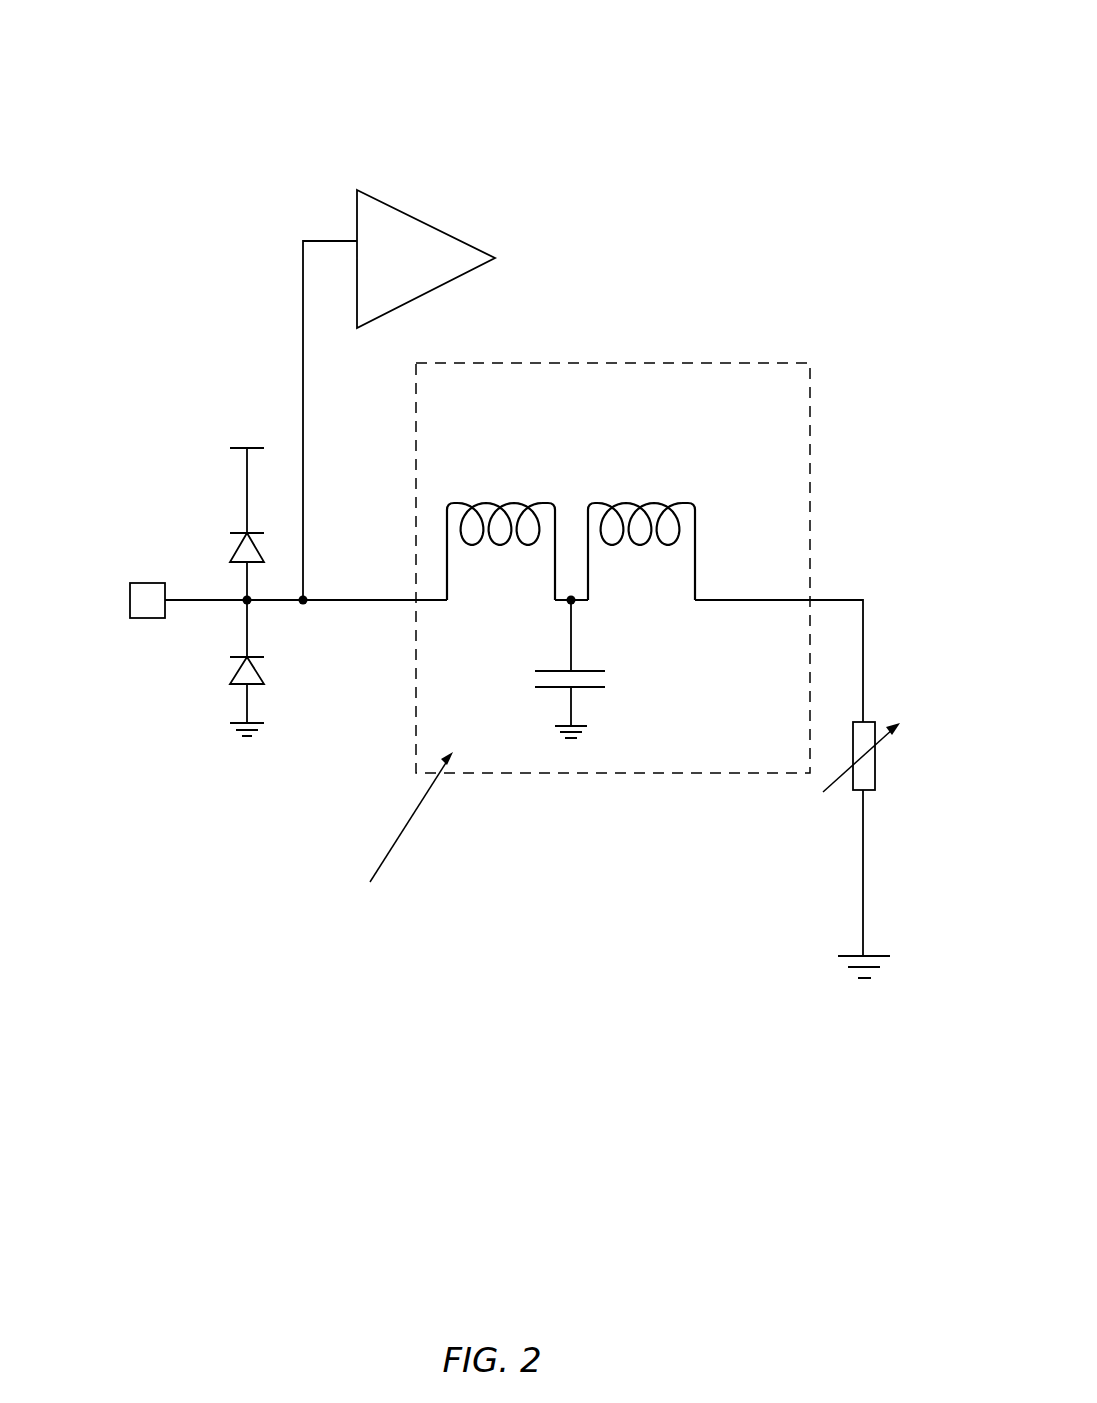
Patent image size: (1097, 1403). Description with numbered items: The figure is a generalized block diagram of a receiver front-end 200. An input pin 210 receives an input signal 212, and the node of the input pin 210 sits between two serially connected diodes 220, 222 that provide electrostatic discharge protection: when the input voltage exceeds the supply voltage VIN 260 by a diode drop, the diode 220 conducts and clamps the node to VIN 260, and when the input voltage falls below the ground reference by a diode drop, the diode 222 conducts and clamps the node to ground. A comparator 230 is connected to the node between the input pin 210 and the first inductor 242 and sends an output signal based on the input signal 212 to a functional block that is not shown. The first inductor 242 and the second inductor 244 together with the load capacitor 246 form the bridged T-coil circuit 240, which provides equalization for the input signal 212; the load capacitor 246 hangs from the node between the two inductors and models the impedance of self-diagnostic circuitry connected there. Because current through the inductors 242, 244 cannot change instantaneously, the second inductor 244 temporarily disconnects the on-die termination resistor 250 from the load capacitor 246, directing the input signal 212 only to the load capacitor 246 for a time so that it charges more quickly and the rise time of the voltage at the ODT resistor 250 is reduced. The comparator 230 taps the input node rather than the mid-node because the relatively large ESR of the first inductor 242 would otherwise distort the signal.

The receiver front-end 200 is at (818, 84).
The input pin 210 is at (143, 583).
The input signal 212 is at (285, 603).
The diode 220 is at (231, 561).
The diode 222 is at (241, 686).
The comparator 230 is at (428, 224).
The bridged T-coil circuit 240 is at (546, 660).
The inductor L1 242 is at (456, 502).
The inductor L2 244 is at (657, 502).
The capacitor C Load 246 is at (547, 688).
The on-die termination (ODT) resistor 250 is at (860, 792).
The supply voltage VIN 260 is at (239, 476).